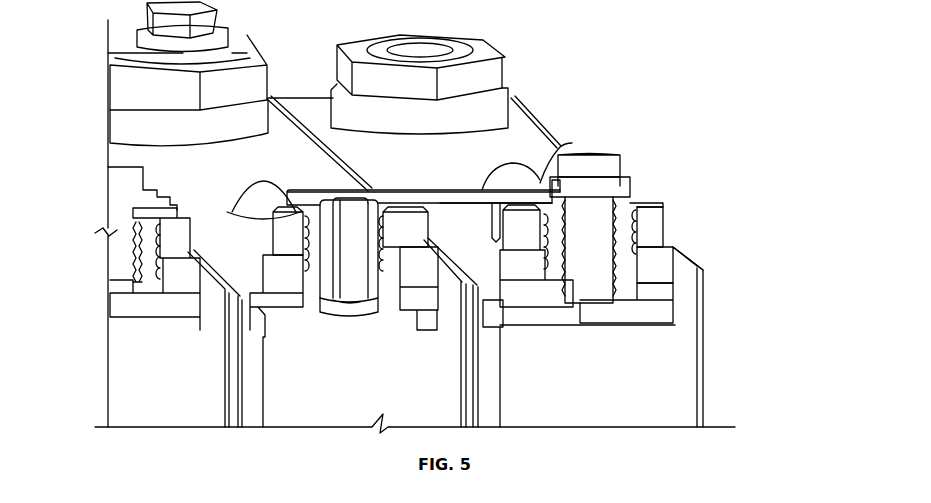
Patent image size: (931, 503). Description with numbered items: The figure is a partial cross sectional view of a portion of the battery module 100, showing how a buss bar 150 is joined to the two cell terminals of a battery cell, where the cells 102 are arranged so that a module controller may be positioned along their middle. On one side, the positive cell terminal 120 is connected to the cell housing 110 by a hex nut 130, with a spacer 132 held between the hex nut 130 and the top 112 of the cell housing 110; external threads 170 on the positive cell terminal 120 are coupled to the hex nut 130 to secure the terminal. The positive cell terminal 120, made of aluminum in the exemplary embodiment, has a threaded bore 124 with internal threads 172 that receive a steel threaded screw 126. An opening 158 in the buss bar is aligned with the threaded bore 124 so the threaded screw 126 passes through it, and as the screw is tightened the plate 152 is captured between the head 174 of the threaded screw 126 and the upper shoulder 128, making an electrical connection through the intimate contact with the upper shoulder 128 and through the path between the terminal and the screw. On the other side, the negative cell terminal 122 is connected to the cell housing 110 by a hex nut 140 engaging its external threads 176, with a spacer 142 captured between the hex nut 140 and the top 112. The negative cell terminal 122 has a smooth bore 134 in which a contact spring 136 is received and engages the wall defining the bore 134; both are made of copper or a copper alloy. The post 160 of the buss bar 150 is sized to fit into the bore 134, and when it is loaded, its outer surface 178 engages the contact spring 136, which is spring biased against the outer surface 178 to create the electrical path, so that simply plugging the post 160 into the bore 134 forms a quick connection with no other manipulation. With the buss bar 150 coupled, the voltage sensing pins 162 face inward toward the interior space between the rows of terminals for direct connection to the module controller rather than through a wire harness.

The battery module 100 is at (545, 30).
The battery cells 102 is at (517, 112).
The cell housing 110 is at (703, 366).
The top of the cell housing 112 is at (530, 146).
The positive cell terminal 120 is at (630, 262).
The negative cell terminal 122 is at (316, 300).
The threaded bore 124 is at (604, 274).
The threaded screw 126 is at (616, 165).
The upper shoulder 128 is at (643, 201).
The hex nut 130 is at (657, 224).
The spacer 132 is at (667, 264).
The smooth bore 134 is at (349, 314).
The contact spring 136 is at (331, 303).
The hex nut 140 is at (290, 240).
The spacer 142 is at (282, 277).
The buss bar 150 is at (443, 186).
The plate 152 is at (470, 197).
The opening 158 is at (624, 190).
The post 160 is at (372, 244).
The voltage sensing pins 162 is at (489, 222).
The external threads 170 is at (540, 262).
The internal threads 172 is at (573, 252).
The head 174 is at (567, 151).
The external threads 176 is at (435, 261).
The outer surface 178 is at (405, 262).